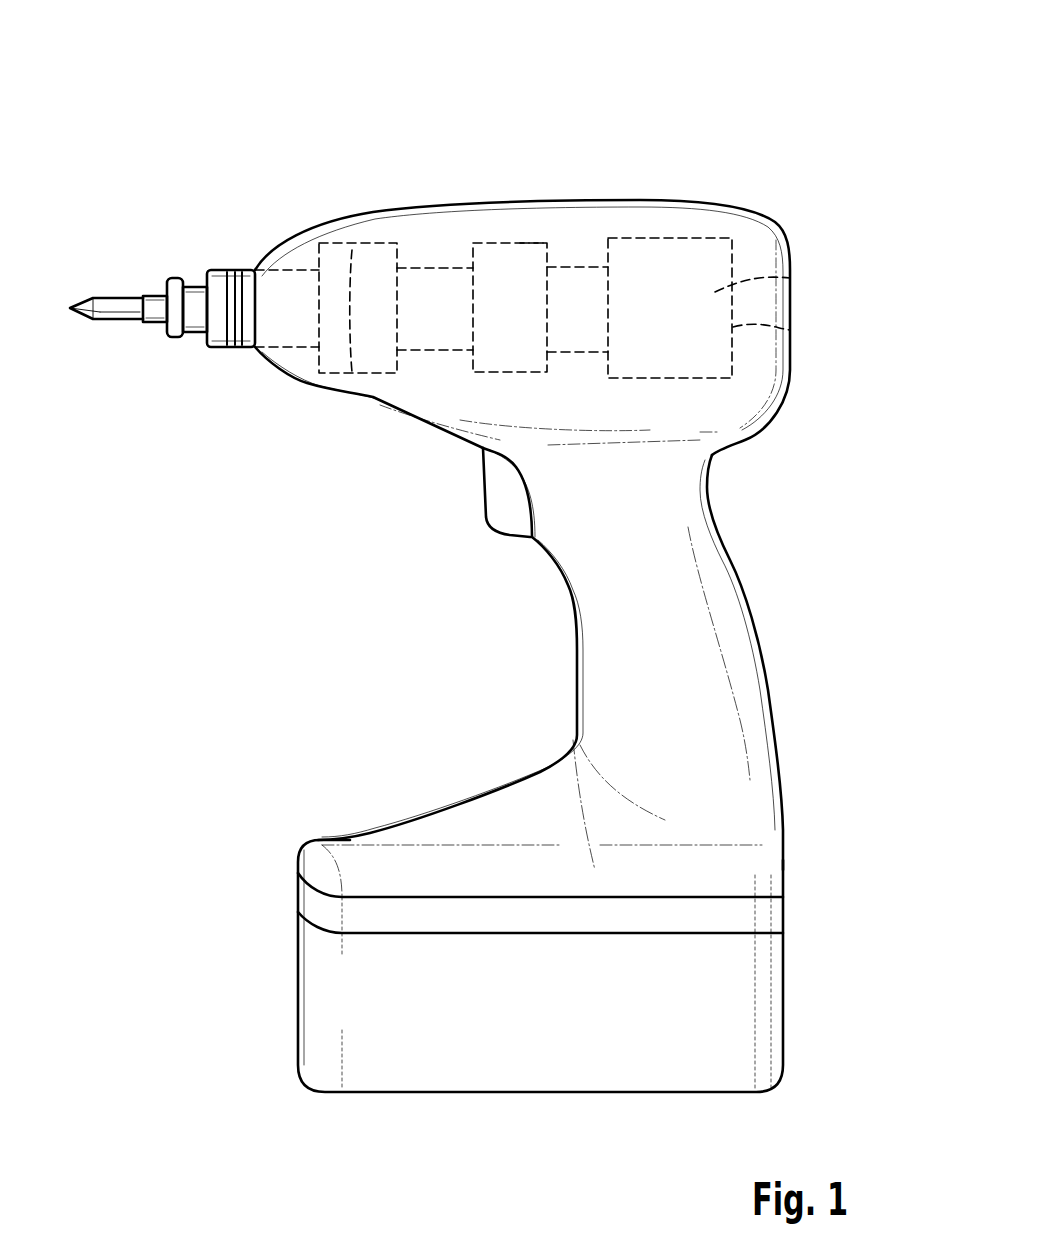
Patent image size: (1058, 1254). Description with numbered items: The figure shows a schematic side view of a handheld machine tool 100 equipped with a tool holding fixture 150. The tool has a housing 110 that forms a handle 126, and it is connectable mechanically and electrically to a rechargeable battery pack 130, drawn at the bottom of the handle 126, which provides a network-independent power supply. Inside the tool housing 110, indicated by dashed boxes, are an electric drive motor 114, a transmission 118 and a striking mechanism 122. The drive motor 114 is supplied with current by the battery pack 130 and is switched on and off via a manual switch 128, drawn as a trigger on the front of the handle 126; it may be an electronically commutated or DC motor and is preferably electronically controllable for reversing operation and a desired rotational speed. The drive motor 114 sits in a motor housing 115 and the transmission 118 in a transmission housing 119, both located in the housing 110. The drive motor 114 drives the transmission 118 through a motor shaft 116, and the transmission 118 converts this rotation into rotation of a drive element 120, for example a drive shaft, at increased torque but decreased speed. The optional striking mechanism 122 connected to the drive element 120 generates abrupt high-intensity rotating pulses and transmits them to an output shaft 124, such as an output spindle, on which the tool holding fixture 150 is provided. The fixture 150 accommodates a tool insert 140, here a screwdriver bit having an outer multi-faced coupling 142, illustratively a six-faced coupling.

The handheld machine tool 100 is at (762, 158).
The housing 110 is at (760, 373).
The drive motor 114 is at (790, 278).
The motor housing 115 is at (790, 330).
The motor shaft 116 is at (585, 277).
The transmission 118 is at (517, 260).
The transmission housing 119 is at (528, 247).
The drive element 120 is at (433, 282).
The striking mechanism 122 is at (367, 257).
The output shaft 124 is at (287, 280).
The handle 126 is at (732, 630).
The manual switch 128 is at (502, 498).
The battery pack 130 is at (760, 1013).
The tool insert 140 is at (102, 312).
The outer multi-faced coupling 142 is at (158, 320).
The tool holding fixture 150 is at (177, 273).